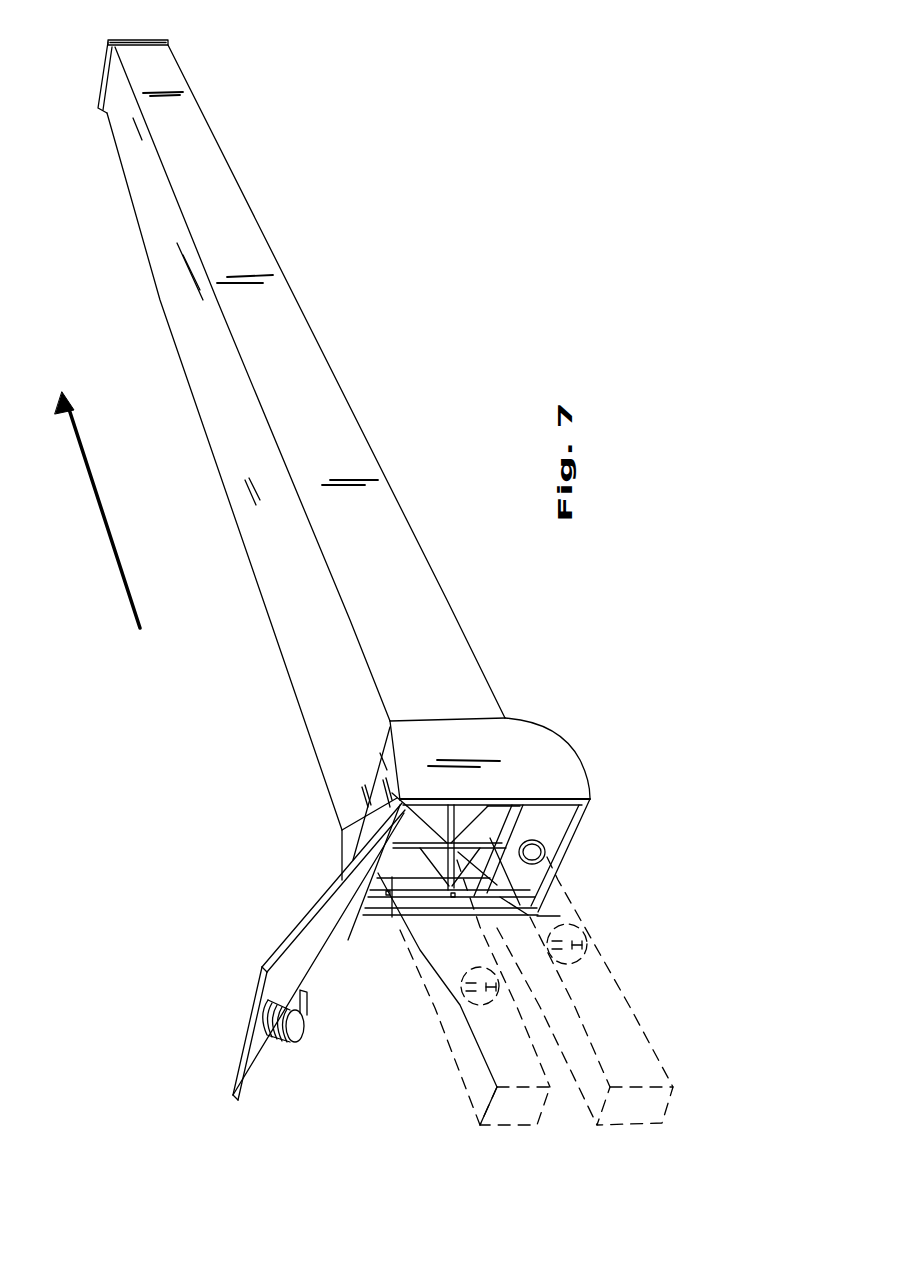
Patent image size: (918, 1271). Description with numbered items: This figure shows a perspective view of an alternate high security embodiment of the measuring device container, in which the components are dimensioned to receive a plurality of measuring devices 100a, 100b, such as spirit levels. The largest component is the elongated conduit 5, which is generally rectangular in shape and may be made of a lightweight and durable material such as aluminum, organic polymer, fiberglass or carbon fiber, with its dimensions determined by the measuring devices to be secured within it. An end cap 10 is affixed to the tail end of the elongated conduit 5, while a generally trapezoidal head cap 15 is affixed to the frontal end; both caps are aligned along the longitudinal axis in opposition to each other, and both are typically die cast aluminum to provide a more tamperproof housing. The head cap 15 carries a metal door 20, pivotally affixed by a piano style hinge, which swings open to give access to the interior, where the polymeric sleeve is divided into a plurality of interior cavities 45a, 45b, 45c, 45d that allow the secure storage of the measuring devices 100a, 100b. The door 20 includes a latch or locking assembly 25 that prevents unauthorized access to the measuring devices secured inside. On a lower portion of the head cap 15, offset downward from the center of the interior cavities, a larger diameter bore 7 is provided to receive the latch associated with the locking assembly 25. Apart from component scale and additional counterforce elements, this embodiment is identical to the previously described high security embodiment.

The elongated conduit 5 is at (270, 255).
The end cap 10 is at (157, 36).
The head cap 15 is at (572, 753).
The door 20 is at (303, 908).
The locking assembly 25 is at (312, 1030).
The larger diameter bore 7 is at (545, 847).
The interior cavity 45a is at (407, 807).
The interior cavity 45b is at (487, 797).
The interior cavity 45c is at (392, 917).
The interior cavity 45d is at (540, 913).
The measuring device 100a is at (513, 1125).
The measuring device 100b is at (636, 1110).